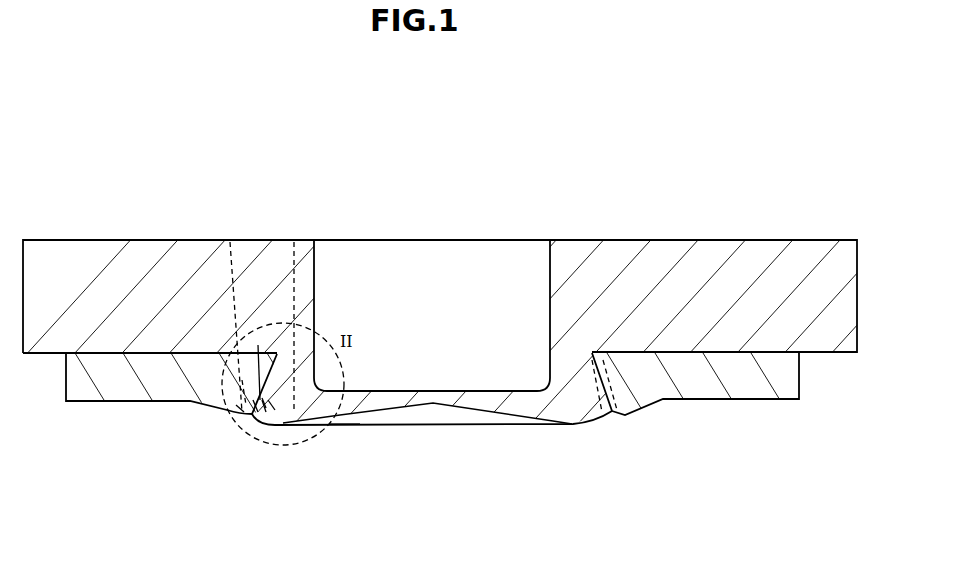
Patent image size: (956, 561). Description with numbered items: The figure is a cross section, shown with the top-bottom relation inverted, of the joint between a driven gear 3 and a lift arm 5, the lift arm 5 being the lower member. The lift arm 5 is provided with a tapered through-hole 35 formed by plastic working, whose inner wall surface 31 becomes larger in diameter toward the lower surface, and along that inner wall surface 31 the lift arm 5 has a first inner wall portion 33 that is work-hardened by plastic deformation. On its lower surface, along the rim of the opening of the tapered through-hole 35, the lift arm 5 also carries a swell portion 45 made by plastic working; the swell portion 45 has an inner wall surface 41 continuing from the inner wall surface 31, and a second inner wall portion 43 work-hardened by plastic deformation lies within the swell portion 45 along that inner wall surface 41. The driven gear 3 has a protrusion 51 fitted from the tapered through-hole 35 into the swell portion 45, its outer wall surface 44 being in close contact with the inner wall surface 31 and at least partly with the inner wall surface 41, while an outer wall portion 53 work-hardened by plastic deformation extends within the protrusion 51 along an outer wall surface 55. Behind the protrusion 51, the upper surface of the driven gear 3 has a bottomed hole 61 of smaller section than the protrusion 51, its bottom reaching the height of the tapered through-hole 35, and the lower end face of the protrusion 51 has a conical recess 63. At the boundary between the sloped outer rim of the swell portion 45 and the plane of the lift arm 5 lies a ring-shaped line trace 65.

The driven gear 3 is at (663, 255).
The lift arm 5 is at (693, 378).
The bottomed hole 61 is at (492, 270).
The conical recess 63 is at (442, 413).
The ring-shaped line trace 65 is at (190, 403).
The protrusion 51 is at (343, 425).
The outer wall portion 53 is at (300, 223).
The outer wall surface 55 is at (263, 412).
The inner wall surface 31 is at (272, 405).
The first inner wall portion 33 is at (230, 238).
The tapered through-hole 35 is at (264, 405).
The inner wall surface 41 is at (259, 400).
The second inner wall portion 43 is at (245, 405).
The outer wall surface 44 is at (256, 412).
The swell portion 45 is at (240, 410).